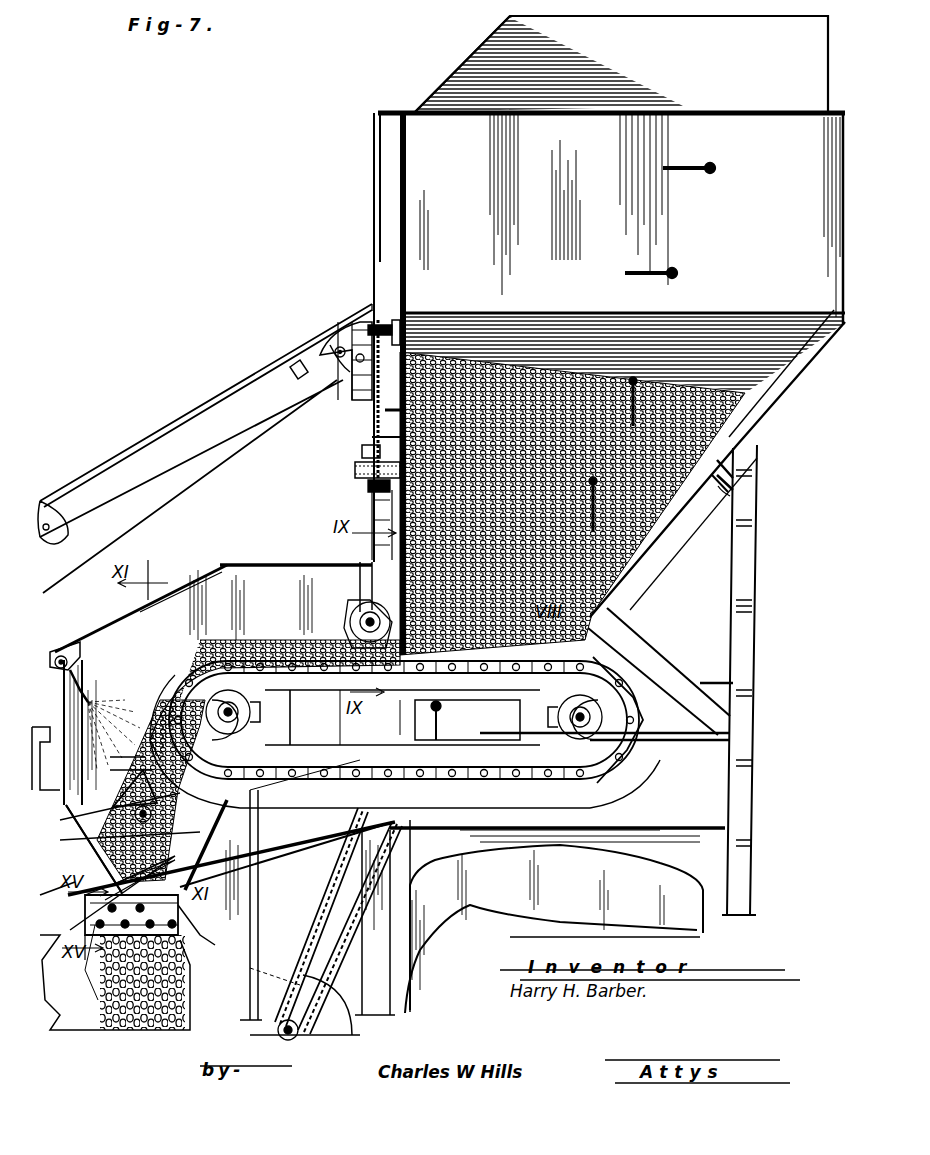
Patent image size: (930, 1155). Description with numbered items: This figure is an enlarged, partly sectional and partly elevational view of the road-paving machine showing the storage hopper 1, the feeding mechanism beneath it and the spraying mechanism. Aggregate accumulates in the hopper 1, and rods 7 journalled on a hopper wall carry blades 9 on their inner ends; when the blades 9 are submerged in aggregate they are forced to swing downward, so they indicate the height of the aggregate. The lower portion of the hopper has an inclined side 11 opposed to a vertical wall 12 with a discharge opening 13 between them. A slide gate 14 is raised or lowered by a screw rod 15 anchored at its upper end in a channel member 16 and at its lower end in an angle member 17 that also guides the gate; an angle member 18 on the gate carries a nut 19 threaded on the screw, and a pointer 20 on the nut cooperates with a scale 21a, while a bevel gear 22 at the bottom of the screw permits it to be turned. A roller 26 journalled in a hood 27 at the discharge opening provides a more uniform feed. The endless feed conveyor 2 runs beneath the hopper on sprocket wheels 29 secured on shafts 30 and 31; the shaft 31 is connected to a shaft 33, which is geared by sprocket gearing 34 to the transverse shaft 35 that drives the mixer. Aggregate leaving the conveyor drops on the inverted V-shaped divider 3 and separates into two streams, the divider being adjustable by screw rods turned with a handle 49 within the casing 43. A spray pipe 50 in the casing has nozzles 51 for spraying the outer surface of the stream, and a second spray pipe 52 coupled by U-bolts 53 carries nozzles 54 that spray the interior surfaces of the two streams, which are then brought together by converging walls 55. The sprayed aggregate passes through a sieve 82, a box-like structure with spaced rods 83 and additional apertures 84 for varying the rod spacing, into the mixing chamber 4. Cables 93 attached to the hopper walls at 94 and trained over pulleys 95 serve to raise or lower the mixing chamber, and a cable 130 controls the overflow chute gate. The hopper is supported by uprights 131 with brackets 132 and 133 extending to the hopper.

The storage hopper 1 is at (404, 182).
The feed conveyor 2 is at (292, 662).
The divider 3 is at (205, 798).
The mixing chamber 4 is at (195, 985).
The rods 7 is at (674, 278).
The blades 9 is at (674, 177).
The inclined side 11 is at (632, 568).
The vertical wall 12 is at (360, 345).
The discharge opening 13 is at (600, 658).
The slide gate 14 is at (400, 522).
The screw rod 15 is at (378, 325).
The channel member 16 is at (410, 322).
The angle member 17 is at (355, 470).
The angle member 18 is at (384, 412).
The nut 19 is at (382, 440).
The pointer 20 is at (362, 451).
The scale 21a is at (345, 350).
The bevel gear 22 is at (380, 492).
The roller 26 is at (366, 590).
The hood 27 is at (352, 604).
The sprocket wheels 29 is at (216, 600).
The shaft 30 is at (700, 722).
The shaft 31 is at (205, 668).
The shaft 33 is at (446, 708).
The sprocket gearing 34 is at (335, 945).
The transverse shaft 35 is at (280, 978).
The casing 43 is at (178, 592).
The handle 49 is at (55, 740).
The spray pipe 50 is at (62, 650).
The nozzles 51 is at (84, 672).
The second spray pipe 52 is at (190, 832).
The U-bolts 53 is at (90, 838).
The nozzles 54 is at (100, 850).
The converging walls 55 is at (112, 866).
The sieve 82 is at (92, 912).
The rods 83 is at (110, 970).
The apertures 84 is at (180, 920).
The cables 93 is at (190, 415).
The cable attachment 94 is at (298, 368).
The pulleys 95 is at (48, 500).
The cable 130 is at (735, 478).
The uprights 131 is at (756, 565).
The bracket 132 is at (640, 648).
The bracket 133 is at (722, 498).